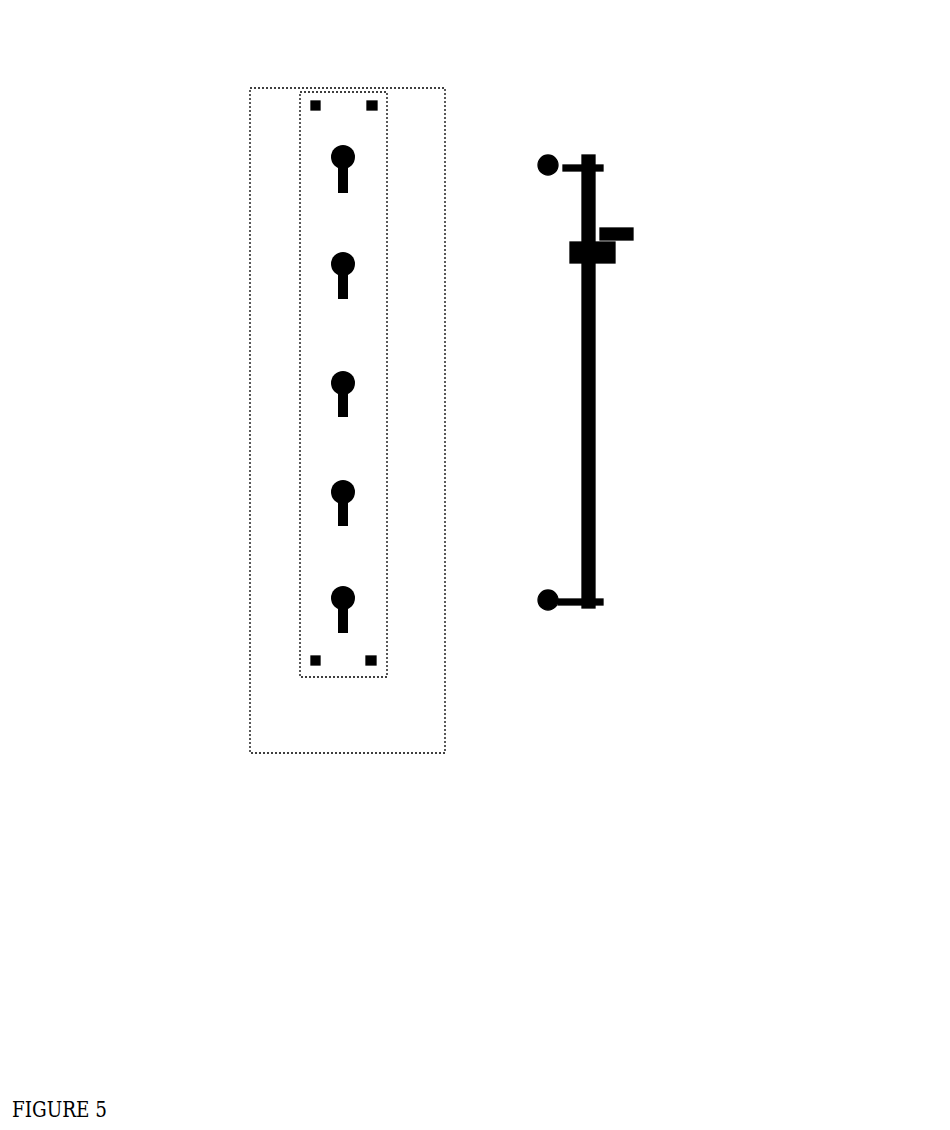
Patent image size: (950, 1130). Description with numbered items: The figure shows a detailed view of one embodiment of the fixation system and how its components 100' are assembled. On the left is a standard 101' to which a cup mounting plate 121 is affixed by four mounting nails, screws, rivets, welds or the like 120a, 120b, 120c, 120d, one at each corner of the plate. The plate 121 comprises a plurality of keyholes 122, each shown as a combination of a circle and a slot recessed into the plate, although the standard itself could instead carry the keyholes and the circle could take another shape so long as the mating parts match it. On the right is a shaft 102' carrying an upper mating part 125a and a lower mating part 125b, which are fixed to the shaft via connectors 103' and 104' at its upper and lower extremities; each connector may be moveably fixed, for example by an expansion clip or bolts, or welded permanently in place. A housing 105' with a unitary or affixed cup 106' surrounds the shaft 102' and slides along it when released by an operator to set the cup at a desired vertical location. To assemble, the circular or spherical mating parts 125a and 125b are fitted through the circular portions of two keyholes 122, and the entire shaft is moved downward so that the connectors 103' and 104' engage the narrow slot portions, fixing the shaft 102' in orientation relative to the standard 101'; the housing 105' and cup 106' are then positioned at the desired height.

The system components 100' is at (681, 392).
The standard 101' is at (253, 420).
The shaft 102' is at (681, 381).
The connector 103' is at (598, 87).
The connector 104' is at (628, 651).
The housing 105' is at (691, 254).
The cup 106' is at (717, 194).
The mounting nail, screw, rivet, or weld 120a is at (303, 104).
The mounting nail, screw, rivet, or weld 120b is at (375, 108).
The mounting nail, screw, rivet, or weld 120c is at (302, 658).
The mounting nail, screw, rivet, or weld 120d is at (367, 658).
The cup mounting plate 121 is at (338, 120).
The keyholes 122 is at (320, 540).
The mating part 125a is at (548, 153).
The mating part 125b is at (548, 612).